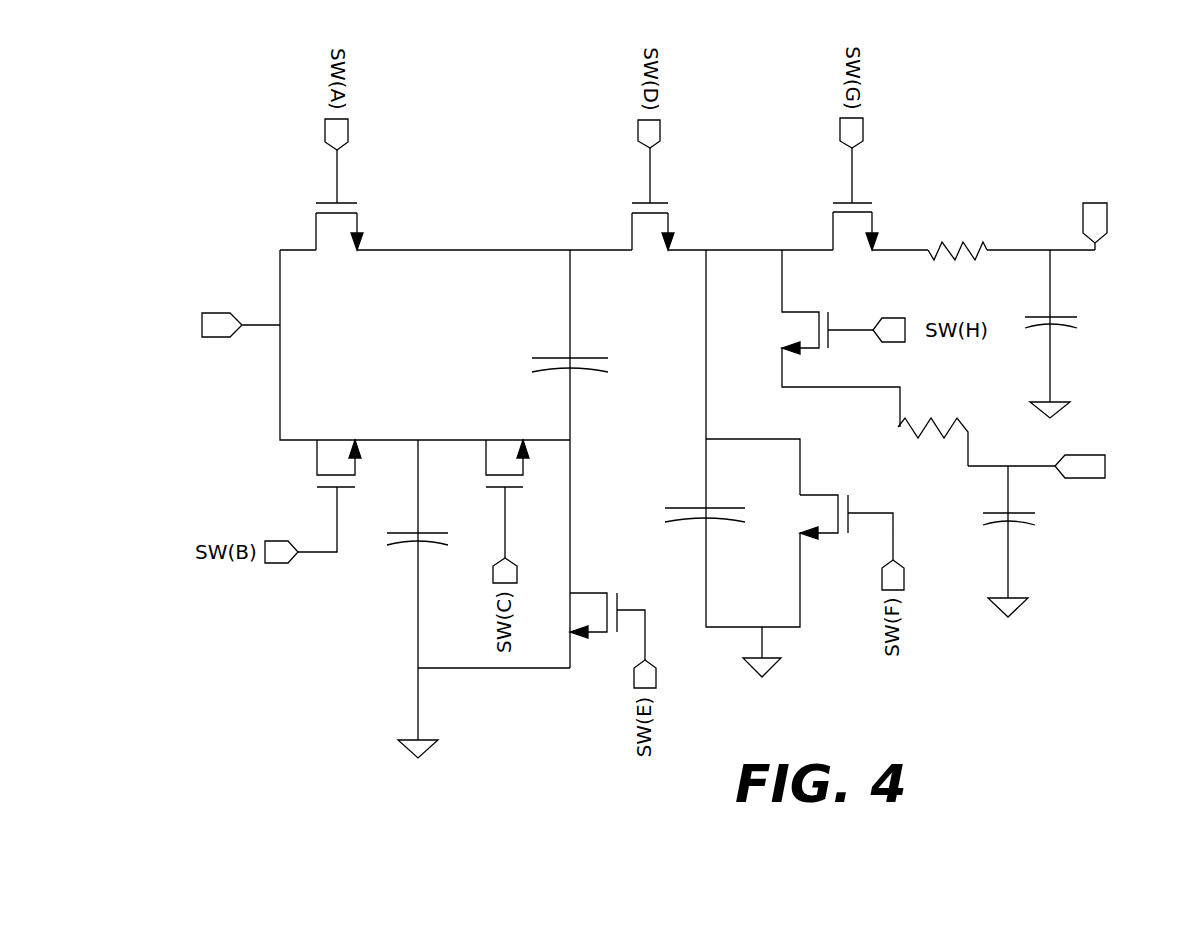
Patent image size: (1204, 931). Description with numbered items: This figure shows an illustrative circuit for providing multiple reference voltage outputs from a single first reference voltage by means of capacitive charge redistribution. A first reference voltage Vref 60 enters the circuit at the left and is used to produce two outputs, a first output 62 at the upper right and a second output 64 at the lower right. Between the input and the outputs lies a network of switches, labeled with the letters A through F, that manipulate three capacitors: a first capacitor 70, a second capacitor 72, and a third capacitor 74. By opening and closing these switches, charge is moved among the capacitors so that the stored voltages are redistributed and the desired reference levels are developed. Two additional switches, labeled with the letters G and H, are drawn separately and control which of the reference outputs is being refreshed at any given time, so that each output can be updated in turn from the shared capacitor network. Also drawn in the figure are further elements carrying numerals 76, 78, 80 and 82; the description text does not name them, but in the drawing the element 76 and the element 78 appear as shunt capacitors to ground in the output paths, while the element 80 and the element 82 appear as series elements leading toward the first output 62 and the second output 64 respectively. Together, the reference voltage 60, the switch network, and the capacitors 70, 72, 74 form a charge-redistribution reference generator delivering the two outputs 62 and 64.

The first Vref 60 is at (170, 315).
The Vout(1) 62 is at (1105, 257).
The Vout(2) 64 is at (1087, 487).
The capacitor C1 70 is at (398, 555).
The capacitor C2 72 is at (583, 350).
The capacitor C3 74 is at (698, 488).
The capacitor C(4) 76 is at (1067, 330).
The capacitor C(5) 78 is at (1015, 532).
The first resistor 80 is at (955, 260).
The second resistor 82 is at (918, 410).